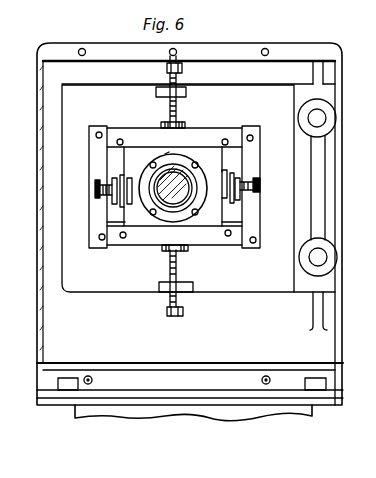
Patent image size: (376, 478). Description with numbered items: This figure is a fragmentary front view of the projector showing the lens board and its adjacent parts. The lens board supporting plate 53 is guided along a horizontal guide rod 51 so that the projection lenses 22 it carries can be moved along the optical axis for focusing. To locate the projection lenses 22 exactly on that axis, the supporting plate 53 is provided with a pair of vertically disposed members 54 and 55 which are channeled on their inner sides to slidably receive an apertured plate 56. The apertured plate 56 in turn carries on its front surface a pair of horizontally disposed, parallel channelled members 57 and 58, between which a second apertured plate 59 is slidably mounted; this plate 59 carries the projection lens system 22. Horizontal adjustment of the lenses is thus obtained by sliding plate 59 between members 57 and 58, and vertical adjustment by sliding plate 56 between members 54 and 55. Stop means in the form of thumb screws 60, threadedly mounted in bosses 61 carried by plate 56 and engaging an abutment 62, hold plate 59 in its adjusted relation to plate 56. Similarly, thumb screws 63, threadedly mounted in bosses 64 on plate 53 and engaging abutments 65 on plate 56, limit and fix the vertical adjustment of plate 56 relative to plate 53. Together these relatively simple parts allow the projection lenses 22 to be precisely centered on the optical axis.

The projection lenses 22 is at (162, 157).
The guide rod 51 is at (317, 187).
The lens board supporting plate 53 is at (72, 250).
The vertically disposed member 54 is at (258, 150).
The vertically disposed member 55 is at (94, 151).
The apertured plate 56 is at (226, 250).
The channelled member 57 is at (210, 138).
The channelled member 58 is at (139, 238).
The apertured plate 59 is at (213, 216).
The thumb screw 60 is at (94, 188).
The boss 61 is at (112, 200).
The abutment 62 is at (127, 202).
The thumb screw 63 is at (183, 70).
The boss 64 is at (186, 92).
The abutment 65 is at (183, 127).